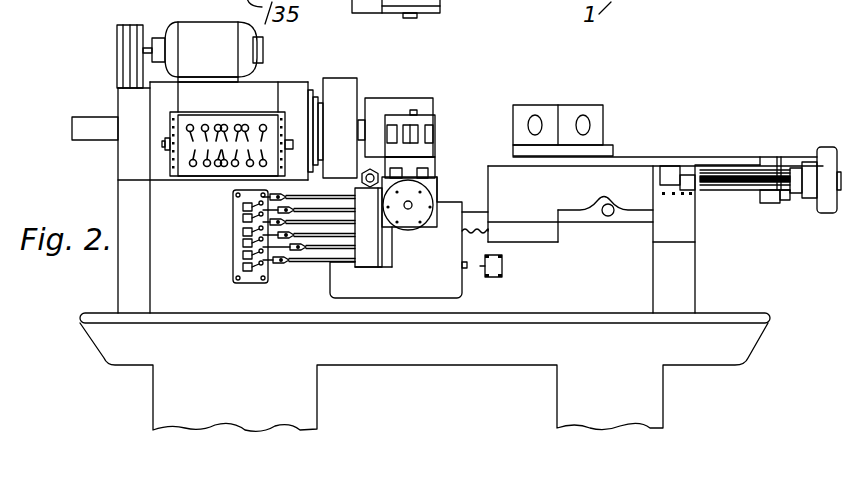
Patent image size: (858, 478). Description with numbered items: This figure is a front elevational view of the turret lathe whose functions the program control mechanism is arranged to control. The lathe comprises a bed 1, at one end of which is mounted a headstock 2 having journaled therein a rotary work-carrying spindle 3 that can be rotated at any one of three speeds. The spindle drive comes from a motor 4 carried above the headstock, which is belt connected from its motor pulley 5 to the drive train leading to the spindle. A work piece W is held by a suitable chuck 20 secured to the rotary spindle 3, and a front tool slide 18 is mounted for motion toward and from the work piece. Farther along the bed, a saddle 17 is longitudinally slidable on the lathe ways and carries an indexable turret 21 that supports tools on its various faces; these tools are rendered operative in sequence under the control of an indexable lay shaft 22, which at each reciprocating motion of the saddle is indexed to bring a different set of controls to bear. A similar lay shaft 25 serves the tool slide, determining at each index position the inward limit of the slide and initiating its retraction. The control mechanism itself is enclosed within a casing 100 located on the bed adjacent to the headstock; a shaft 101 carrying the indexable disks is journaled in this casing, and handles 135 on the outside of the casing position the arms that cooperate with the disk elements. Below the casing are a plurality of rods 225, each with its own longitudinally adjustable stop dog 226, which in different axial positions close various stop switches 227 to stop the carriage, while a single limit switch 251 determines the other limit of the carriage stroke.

The bed 1 is at (477, 355).
The headstock 2 is at (305, 78).
The rotary work-carrying spindle 3 is at (88, 127).
The motor 4 is at (247, 52).
The motor pulley 5 is at (117, 40).
The saddle 17 is at (705, 156).
The front tool slide 18 is at (437, 151).
The chuck 20 is at (338, 96).
The indexable turret 21 is at (582, 110).
The indexable lay shaft 22 is at (752, 187).
The lay shaft 25 is at (369, 190).
The casing 100 is at (210, 177).
The shaft 101 is at (163, 144).
The handle 135 is at (240, 125).
The rods 225 is at (343, 250).
The stop dog 226 is at (299, 263).
The stop switches 227 is at (240, 206).
The limit switch 251 is at (503, 265).
The work piece W is at (415, 100).